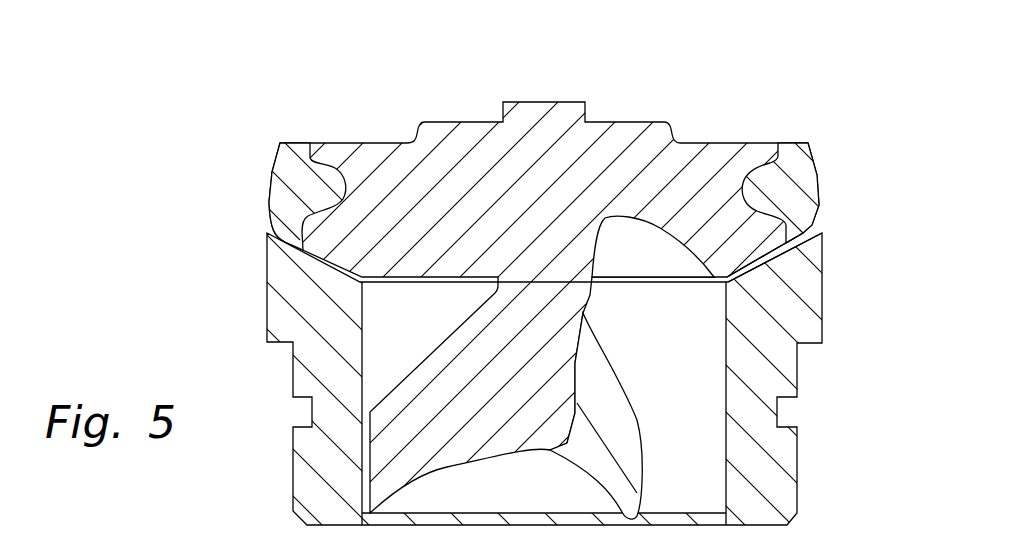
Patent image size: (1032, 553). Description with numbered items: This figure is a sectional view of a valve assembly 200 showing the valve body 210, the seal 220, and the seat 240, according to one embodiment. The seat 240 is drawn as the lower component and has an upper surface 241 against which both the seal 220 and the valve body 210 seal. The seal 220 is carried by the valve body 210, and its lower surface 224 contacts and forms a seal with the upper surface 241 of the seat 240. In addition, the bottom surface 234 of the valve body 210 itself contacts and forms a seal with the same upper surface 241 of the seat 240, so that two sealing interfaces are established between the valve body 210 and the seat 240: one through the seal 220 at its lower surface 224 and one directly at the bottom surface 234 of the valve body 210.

The assembly 200 is at (255, 59).
The valve body 210 is at (629, 122).
The seal 220 is at (818, 171).
The lower surface 224 is at (782, 240).
The bottom surface 234 is at (747, 248).
The seat 240 is at (822, 325).
The upper surface 241 is at (693, 250).